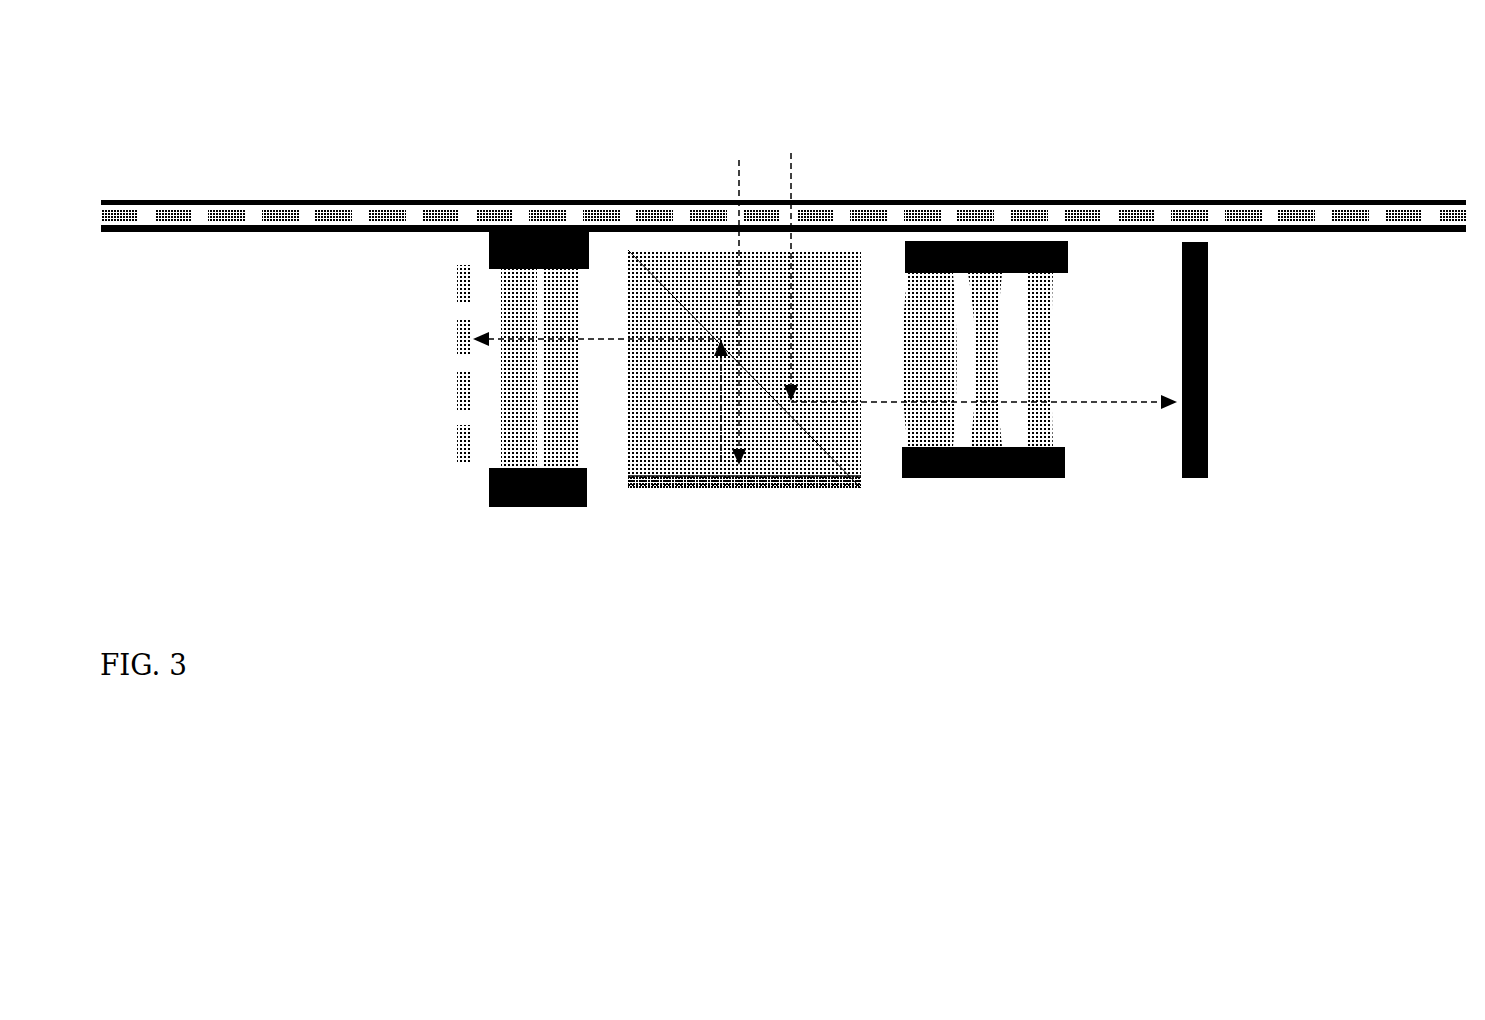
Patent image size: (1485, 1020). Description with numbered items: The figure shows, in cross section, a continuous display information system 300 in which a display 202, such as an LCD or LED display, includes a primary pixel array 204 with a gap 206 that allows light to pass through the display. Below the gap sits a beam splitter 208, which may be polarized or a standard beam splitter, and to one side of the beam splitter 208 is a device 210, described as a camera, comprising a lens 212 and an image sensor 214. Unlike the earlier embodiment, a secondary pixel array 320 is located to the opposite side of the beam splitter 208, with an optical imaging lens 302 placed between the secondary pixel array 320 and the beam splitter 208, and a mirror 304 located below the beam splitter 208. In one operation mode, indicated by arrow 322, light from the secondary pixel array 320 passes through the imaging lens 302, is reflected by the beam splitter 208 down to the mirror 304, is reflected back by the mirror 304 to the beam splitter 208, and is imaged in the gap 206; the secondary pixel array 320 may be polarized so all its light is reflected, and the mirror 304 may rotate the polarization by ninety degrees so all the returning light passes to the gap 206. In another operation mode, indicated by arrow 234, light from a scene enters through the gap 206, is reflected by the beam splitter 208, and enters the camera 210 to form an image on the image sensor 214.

The continuous display information system 300 is at (273, 98).
The display 202 is at (783, 234).
The primary pixel array 204 is at (388, 222).
The gap 206 is at (647, 200).
The beam splitter 208 is at (713, 425).
The device 210 is at (1055, 406).
The lens 212 is at (995, 314).
The image sensor 214 is at (1208, 374).
The arrow 234 is at (795, 163).
The optical imaging lens 302 is at (489, 478).
The mirror 304 is at (700, 486).
The secondary pixel array 320 is at (455, 392).
The arrow 322 is at (739, 162).